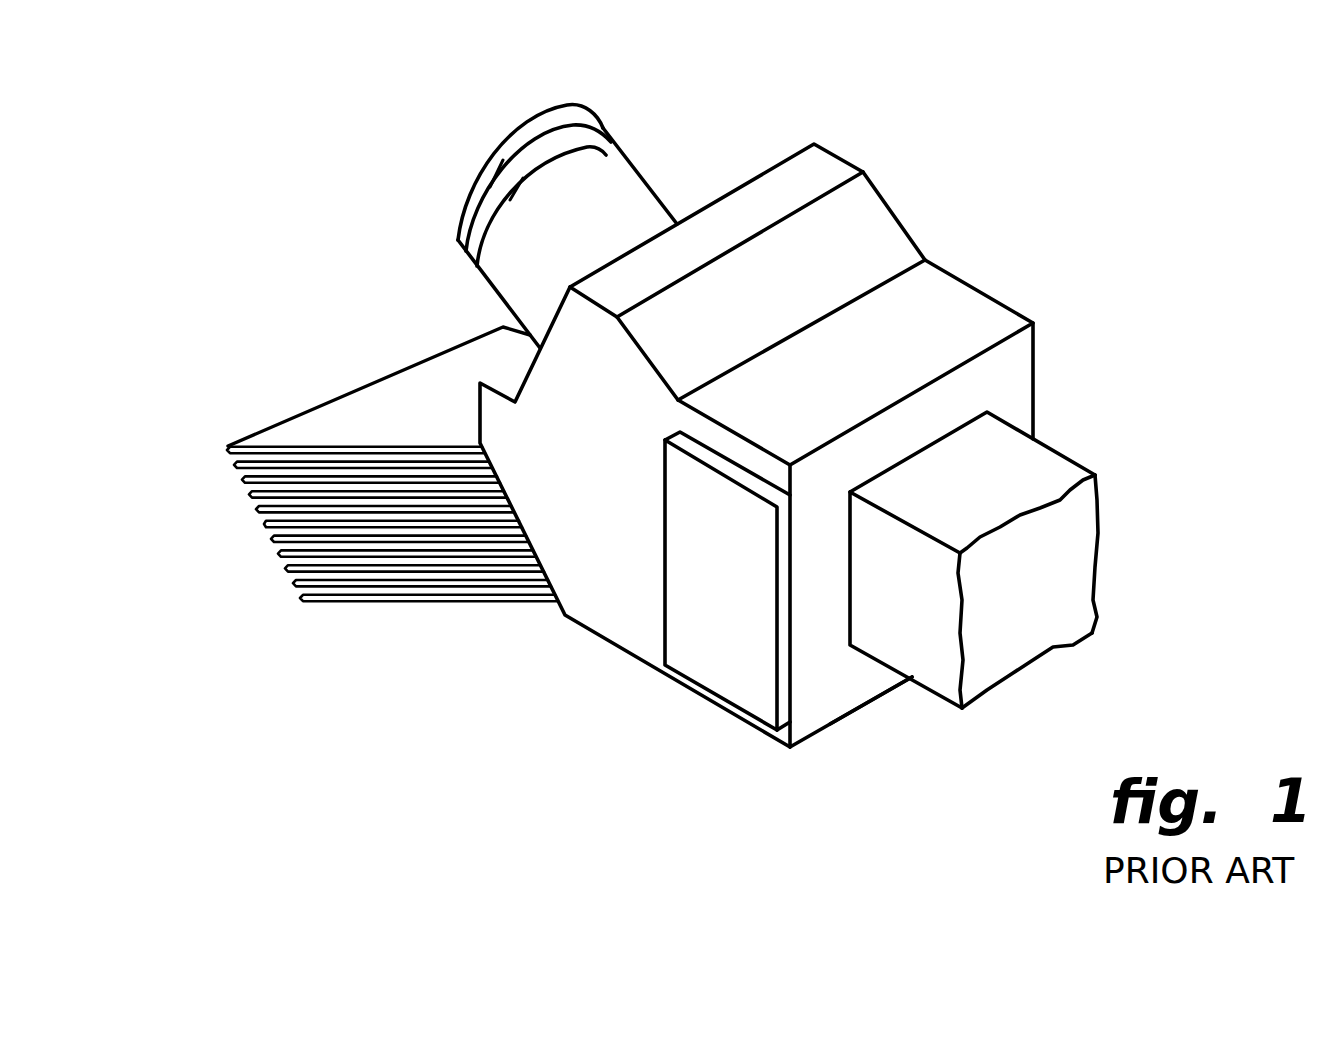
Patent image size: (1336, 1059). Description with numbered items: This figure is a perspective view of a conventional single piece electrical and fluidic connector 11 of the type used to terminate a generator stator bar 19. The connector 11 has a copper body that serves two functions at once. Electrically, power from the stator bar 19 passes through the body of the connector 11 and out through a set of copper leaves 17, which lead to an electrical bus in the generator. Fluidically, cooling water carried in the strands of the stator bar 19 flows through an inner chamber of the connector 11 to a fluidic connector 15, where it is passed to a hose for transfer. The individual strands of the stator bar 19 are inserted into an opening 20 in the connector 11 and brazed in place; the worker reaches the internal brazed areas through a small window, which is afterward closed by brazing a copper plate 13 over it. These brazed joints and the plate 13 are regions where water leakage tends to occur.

The connector 11 is at (600, 605).
The plate 13 is at (708, 673).
The fluidic connector 15 is at (625, 190).
The copper leaves 17 is at (358, 602).
The stator bar 19 is at (1045, 467).
The opening 20 is at (847, 618).